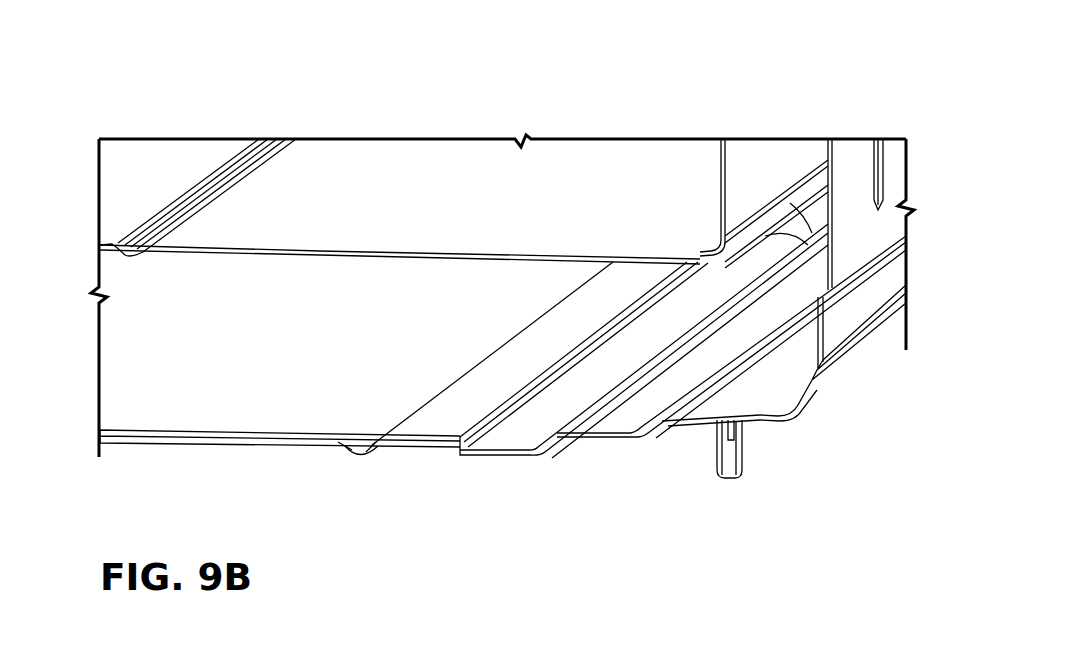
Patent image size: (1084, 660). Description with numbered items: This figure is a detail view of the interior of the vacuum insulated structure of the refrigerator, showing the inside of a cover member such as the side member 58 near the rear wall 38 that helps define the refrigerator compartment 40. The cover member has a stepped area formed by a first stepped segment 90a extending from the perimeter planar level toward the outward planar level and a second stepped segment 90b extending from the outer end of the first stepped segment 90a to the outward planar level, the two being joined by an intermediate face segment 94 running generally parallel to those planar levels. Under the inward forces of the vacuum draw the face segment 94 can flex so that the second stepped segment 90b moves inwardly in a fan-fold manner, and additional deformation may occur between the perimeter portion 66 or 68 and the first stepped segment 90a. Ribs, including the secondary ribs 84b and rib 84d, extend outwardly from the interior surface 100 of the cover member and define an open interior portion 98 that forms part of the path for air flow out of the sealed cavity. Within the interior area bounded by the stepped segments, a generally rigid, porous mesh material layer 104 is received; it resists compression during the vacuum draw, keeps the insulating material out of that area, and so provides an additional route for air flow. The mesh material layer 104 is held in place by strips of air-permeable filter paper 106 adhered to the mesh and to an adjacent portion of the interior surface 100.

The rear wall 38 is at (582, 223).
The refrigerator compartment 40 is at (435, 188).
The side member 58 is at (853, 233).
The perimeter portion 66 is at (787, 423).
The perimeter portion 68 is at (818, 383).
The secondary ribs 84b is at (877, 190).
The peg 84d is at (358, 452).
The first stepped segment 90a is at (660, 430).
The second stepped segment 90b is at (540, 443).
The intermediate face segment 94 is at (603, 433).
The open interior portion 98 is at (362, 447).
The interior surface 100 is at (428, 443).
The mesh material layer 104 is at (255, 408).
The filter paper 106 is at (443, 402).